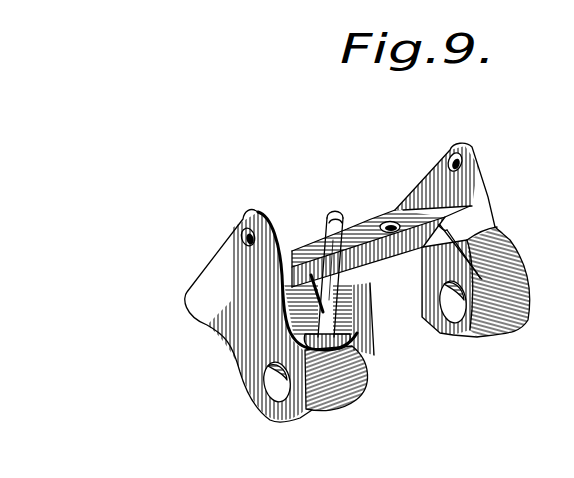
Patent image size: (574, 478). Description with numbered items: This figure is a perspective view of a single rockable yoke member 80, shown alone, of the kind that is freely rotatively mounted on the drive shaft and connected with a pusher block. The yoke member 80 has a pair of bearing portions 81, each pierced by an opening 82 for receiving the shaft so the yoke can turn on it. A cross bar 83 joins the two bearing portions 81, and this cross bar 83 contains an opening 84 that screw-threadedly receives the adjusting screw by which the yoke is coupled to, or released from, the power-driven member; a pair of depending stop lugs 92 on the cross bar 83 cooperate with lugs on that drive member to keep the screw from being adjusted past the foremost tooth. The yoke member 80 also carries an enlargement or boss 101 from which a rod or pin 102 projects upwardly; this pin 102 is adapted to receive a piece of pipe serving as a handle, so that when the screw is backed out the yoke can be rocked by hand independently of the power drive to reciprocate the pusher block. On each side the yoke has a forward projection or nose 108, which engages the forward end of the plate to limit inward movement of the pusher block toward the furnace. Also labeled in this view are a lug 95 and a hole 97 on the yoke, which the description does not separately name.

The yoke member 80 is at (245, 328).
The bearing portions 81 is at (345, 392).
The openings 82 is at (270, 386).
The cross bar 83 is at (352, 230).
The opening 84 is at (392, 222).
The depending stop lugs 92 is at (413, 275).
The lug 95 is at (466, 146).
The hole in lug 97 is at (240, 237).
The enlargement or boss 101 is at (356, 340).
The rod or pin 102 is at (325, 264).
The forward projection or nose 108 is at (190, 297).